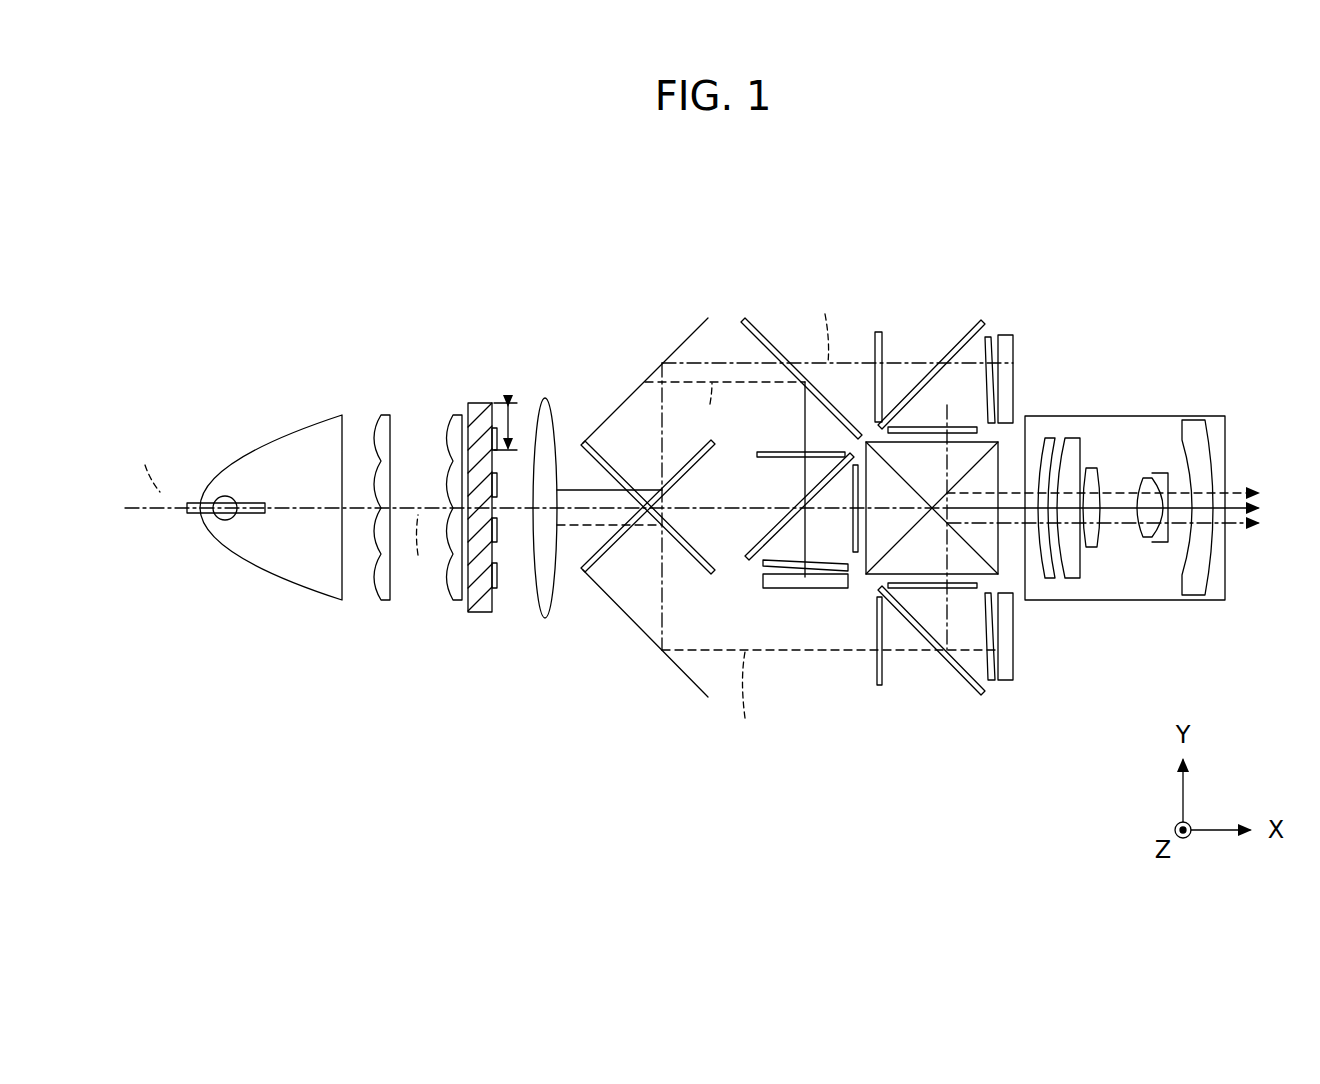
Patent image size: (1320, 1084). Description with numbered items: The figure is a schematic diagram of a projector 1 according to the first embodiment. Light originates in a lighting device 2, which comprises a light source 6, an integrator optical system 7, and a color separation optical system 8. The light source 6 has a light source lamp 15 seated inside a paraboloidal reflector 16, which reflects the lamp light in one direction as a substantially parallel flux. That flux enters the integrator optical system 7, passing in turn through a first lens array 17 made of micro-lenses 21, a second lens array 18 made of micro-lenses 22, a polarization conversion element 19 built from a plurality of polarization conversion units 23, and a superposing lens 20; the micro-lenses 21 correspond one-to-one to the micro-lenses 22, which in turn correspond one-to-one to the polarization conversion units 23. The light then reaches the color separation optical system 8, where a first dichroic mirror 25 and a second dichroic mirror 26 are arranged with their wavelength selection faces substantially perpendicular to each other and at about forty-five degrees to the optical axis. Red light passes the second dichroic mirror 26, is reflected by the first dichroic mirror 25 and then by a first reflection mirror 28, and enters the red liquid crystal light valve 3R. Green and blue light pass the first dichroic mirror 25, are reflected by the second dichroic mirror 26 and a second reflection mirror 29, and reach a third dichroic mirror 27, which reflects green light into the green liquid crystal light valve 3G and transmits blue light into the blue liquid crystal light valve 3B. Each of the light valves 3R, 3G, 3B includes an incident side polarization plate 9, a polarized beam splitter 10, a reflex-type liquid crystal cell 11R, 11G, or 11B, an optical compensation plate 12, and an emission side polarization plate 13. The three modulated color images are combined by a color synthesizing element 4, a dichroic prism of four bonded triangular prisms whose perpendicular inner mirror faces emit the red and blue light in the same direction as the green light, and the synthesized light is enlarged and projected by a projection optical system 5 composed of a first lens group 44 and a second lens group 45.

The projector 1 is at (795, 225).
The lighting device 2 is at (556, 326).
The blue liquid crystal light valve 3B is at (916, 310).
The green liquid crystal light valve 3G is at (806, 610).
The red liquid crystal light valve 3R is at (920, 698).
The color synthesizing element 4 is at (993, 462).
The projection optical system 5 is at (1215, 647).
The light source 6 is at (266, 424).
The integrator optical system 7 is at (348, 678).
The color separation optical system 8 is at (620, 636).
The incident side polarization plate 9 is at (777, 452).
The polarized beam splitter 10 is at (784, 521).
The blue reflex-type liquid crystal cell 11B is at (1005, 335).
The green reflex-type liquid crystal cell 11G is at (763, 584).
The red reflex-type liquid crystal cell 11R is at (1005, 682).
The optical compensation plate 12 is at (763, 564).
The emission side polarization plate 13 is at (853, 531).
The light source lamp 15 is at (225, 520).
The paraboloidal reflector 16 is at (275, 590).
The first lens array 17 is at (375, 602).
The second lens array 18 is at (448, 602).
The polarization conversion element 19 is at (476, 614).
The superposing lens 20 is at (541, 612).
The micro-lens of first lens array 21 is at (375, 425).
The micro-lens of second lens array 22 is at (450, 425).
The polarization conversion unit 23 is at (510, 403).
The first dichroic mirror 25 is at (690, 550).
The second dichroic mirror 26 is at (696, 468).
The third dichroic mirror 27 is at (778, 355).
The first reflection mirror 28 is at (688, 677).
The second reflection mirror 29 is at (690, 336).
The first lens group 44 is at (1036, 604).
The second lens group 45 is at (1213, 604).